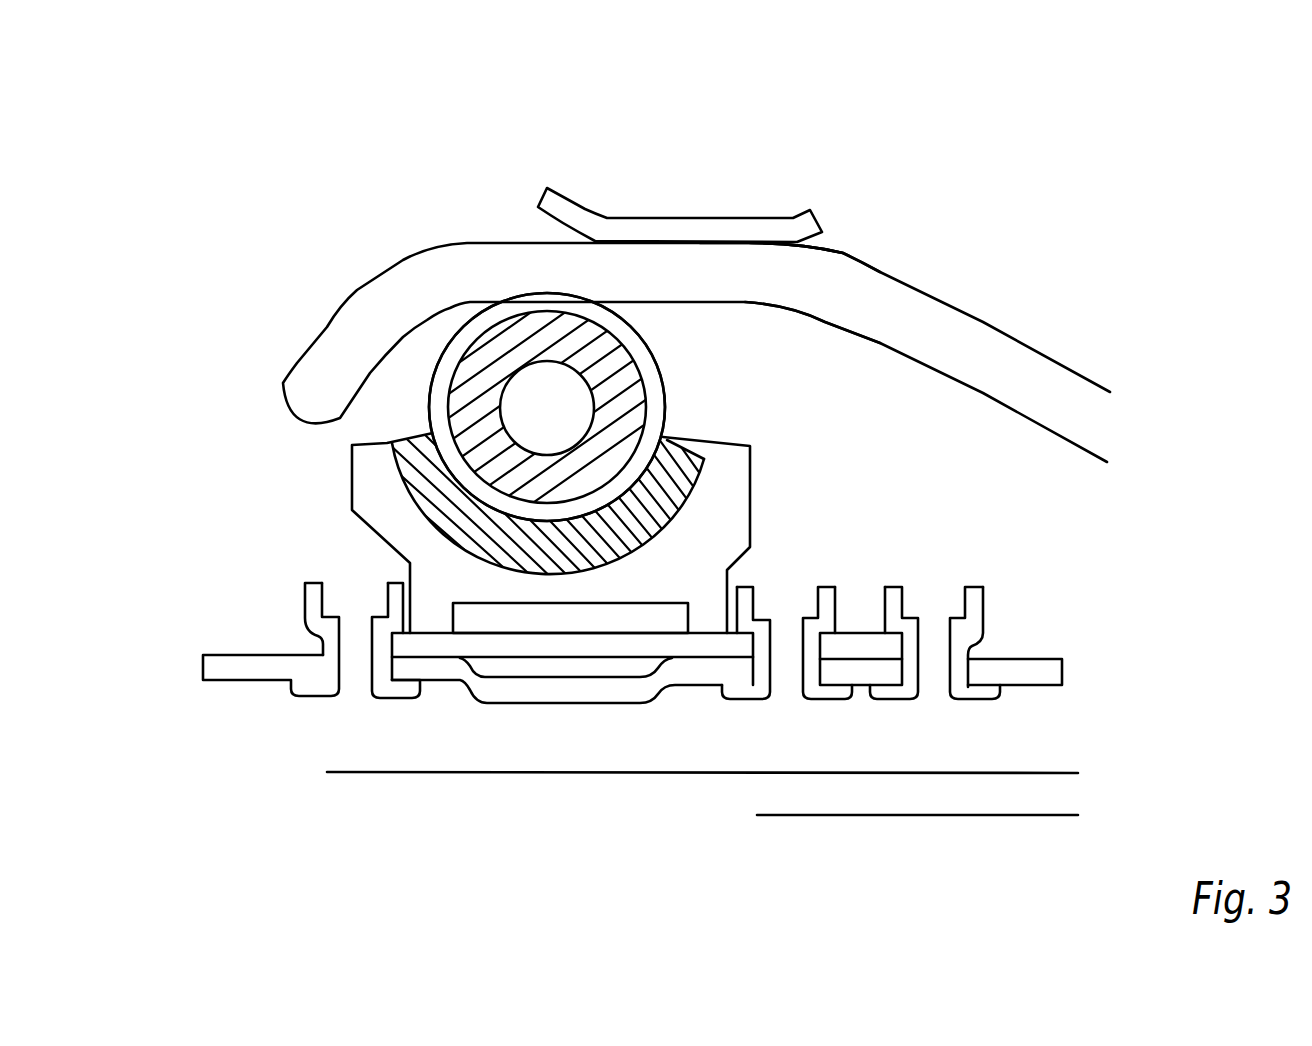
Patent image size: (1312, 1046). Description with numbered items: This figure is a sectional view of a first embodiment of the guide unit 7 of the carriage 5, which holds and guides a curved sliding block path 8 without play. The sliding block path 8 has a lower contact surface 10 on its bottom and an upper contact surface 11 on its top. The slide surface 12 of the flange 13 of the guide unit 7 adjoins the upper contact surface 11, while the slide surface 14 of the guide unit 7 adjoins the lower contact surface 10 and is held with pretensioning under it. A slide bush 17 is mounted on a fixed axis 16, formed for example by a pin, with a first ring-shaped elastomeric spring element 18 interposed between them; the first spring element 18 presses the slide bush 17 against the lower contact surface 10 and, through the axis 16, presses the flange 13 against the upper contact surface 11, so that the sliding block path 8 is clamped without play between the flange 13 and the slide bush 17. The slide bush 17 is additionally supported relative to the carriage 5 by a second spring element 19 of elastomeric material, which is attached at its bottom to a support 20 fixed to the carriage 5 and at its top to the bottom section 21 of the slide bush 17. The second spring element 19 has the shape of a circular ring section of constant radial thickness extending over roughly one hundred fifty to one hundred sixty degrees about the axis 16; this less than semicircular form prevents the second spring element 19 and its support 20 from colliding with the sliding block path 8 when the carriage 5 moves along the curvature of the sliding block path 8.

The carriage 5 is at (272, 667).
The guide unit 7 is at (318, 564).
The sliding block path 8 is at (880, 305).
The lower contact surface 10 is at (822, 325).
The upper contact surface 11 is at (843, 257).
The slide surface 12 is at (763, 246).
The flange 13 is at (713, 228).
The slide surface 14 is at (627, 322).
The axis 16 is at (543, 408).
The slide bush 17 is at (445, 365).
The first spring element 18 is at (475, 414).
The second spring element 19 is at (563, 547).
The support 20 is at (647, 577).
The bottom section 21 is at (480, 482).